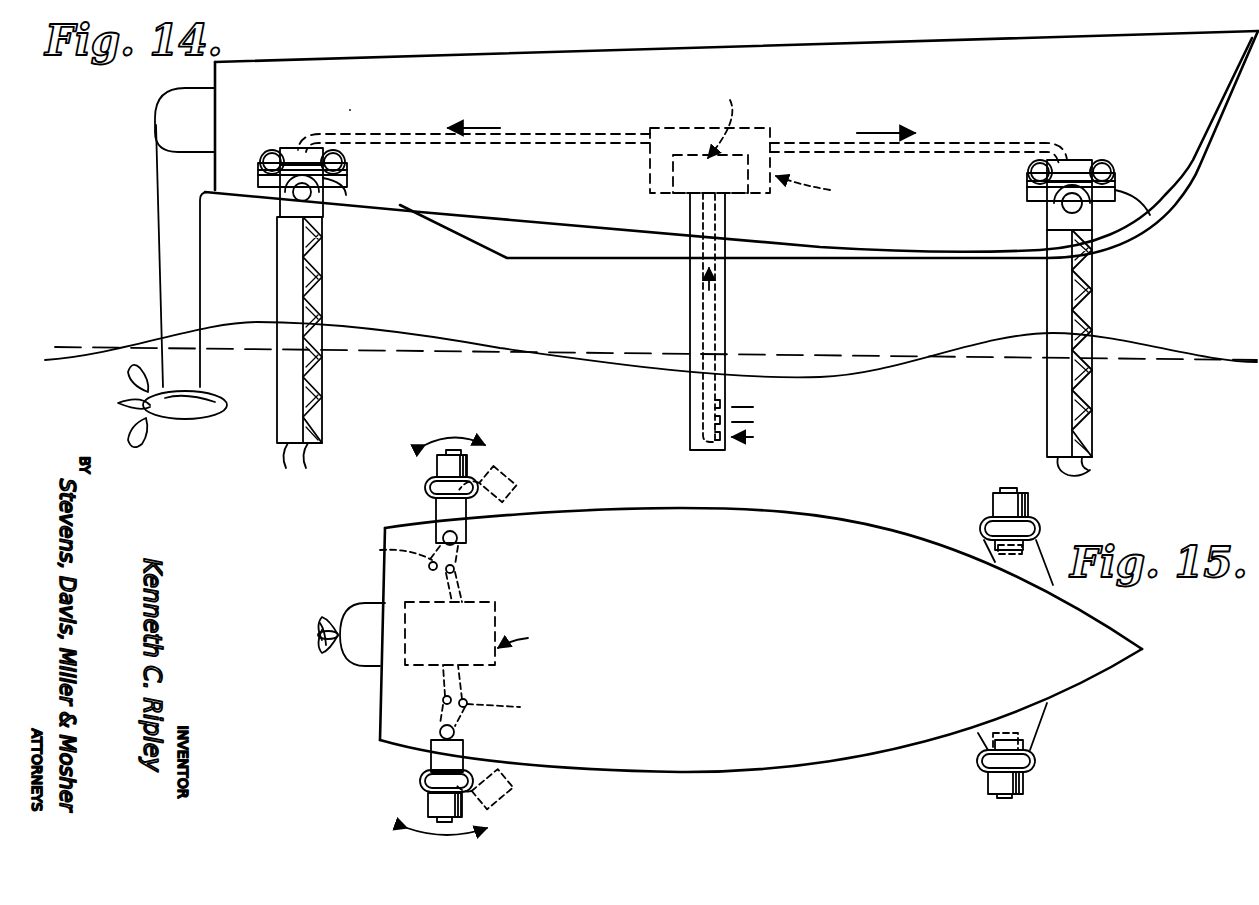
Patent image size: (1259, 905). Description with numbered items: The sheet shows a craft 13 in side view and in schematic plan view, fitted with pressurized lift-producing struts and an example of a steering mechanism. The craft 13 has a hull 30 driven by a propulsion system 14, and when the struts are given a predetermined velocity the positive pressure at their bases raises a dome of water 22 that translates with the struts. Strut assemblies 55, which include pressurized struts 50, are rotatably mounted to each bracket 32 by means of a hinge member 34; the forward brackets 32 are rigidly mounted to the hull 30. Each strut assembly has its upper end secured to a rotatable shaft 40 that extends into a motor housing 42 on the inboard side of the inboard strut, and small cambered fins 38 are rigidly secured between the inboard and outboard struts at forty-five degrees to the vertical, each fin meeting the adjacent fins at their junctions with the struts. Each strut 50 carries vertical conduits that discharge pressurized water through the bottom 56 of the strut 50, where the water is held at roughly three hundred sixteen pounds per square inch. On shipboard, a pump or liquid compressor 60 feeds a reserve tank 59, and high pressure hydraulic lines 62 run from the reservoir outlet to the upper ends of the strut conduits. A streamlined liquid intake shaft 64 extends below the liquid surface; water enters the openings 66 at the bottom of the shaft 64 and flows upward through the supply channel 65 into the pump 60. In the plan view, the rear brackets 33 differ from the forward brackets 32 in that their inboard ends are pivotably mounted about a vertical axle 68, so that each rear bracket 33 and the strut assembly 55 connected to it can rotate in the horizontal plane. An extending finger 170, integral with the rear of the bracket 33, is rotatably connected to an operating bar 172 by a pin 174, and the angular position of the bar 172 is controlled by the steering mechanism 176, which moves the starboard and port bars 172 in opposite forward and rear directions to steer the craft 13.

In FIG. 14, the craft 13 is at (497, 52).
In FIG. 15, the craft 13 is at (835, 515).
In FIG. 14, the propulsion system 14 is at (146, 440).
In FIG. 15, the propulsion system 14 is at (326, 615).
In FIG. 14, the dome of water 22 is at (400, 331).
In FIG. 14, the hull 30 is at (565, 83).
In FIG. 15, the hull 30 is at (655, 508).
In FIG. 14, the bracket 32 is at (1118, 200).
In FIG. 15, the bracket 32 is at (1022, 565).
In FIG. 14, the rear bracket 33 is at (338, 195).
In FIG. 15, the rear bracket 33 is at (435, 508).
In FIG. 14, the hinge member 34 is at (282, 150).
In FIG. 15, the hinge member 34 is at (425, 488).
In FIG. 14, the cambered fin 38 is at (320, 275).
In FIG. 14, the rotatable shaft 40 is at (292, 197).
In FIG. 15, the motor housing 42 is at (995, 540).
In FIG. 14, the pressurized strut 50 is at (322, 386).
In FIG. 14, the strut assembly 55 is at (326, 407).
In FIG. 15, the strut assembly 55 is at (432, 463).
In FIG. 14, the bottom of strut 56 is at (1100, 478).
In FIG. 14, the reserve tank 59 is at (652, 184).
In FIG. 14, the pump 60 is at (683, 160).
In FIG. 14, the high pressure hydraulic line 62 is at (390, 130).
In FIG. 14, the liquid intake shaft 64 is at (690, 294).
In FIG. 14, the supply channel 65 is at (703, 386).
In FIG. 14, the intake openings 66 is at (720, 442).
In FIG. 15, the vertical axle 68 is at (460, 545).
In FIG. 15, the extending finger 170 is at (380, 550).
In FIG. 15, the operating bar 172 is at (456, 590).
In FIG. 15, the pin 174 is at (430, 572).
In FIG. 15, the steering mechanism 176 is at (416, 672).